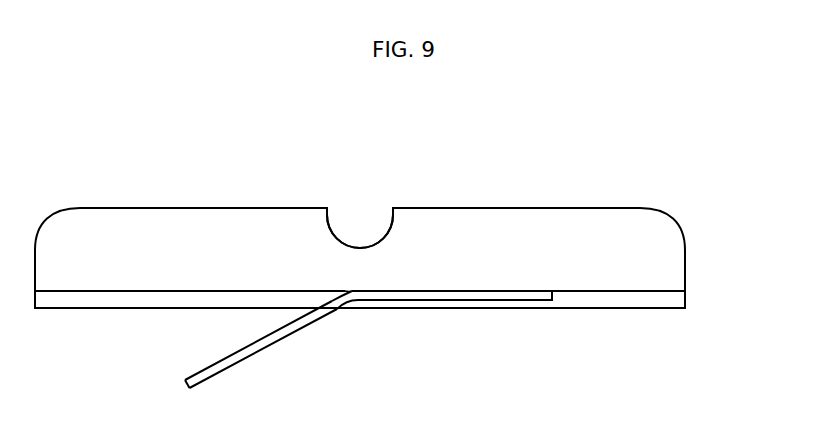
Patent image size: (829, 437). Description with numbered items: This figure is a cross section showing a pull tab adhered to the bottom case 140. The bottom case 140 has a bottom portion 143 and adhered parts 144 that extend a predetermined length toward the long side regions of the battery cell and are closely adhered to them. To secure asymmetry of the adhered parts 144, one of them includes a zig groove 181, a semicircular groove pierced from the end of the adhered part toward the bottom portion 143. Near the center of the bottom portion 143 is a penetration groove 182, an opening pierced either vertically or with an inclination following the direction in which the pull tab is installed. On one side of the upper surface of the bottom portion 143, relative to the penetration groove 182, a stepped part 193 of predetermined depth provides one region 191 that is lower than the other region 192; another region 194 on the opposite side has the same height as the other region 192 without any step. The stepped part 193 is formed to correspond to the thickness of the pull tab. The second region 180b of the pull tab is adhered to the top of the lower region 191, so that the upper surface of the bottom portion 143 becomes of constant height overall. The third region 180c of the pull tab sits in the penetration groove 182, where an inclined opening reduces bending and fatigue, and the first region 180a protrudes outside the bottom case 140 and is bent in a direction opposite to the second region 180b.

The bottom case 140 is at (691, 182).
The bottom portion 143 is at (685, 297).
The adhered parts 144 is at (672, 262).
The first region of the pull tab 180a is at (240, 362).
The second region of the pull tab 180b is at (454, 300).
The third region of the pull tab 180c is at (355, 307).
The zig groove 181 is at (373, 217).
The penetration groove 182 is at (347, 291).
The one region 191 is at (485, 297).
The other region 192 is at (623, 291).
The stepped part 193 is at (561, 296).
The another region 194 is at (82, 298).